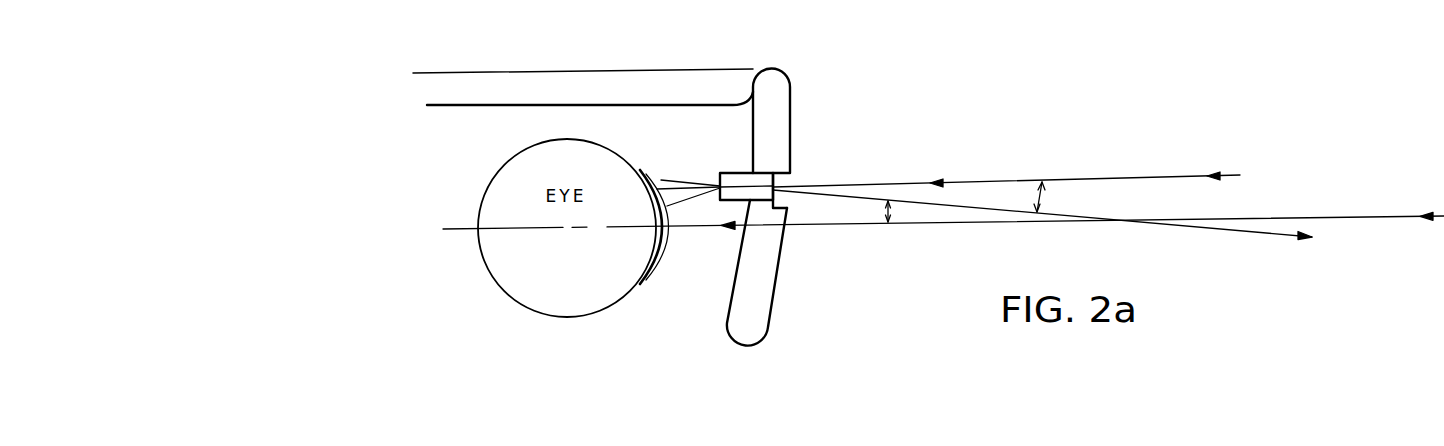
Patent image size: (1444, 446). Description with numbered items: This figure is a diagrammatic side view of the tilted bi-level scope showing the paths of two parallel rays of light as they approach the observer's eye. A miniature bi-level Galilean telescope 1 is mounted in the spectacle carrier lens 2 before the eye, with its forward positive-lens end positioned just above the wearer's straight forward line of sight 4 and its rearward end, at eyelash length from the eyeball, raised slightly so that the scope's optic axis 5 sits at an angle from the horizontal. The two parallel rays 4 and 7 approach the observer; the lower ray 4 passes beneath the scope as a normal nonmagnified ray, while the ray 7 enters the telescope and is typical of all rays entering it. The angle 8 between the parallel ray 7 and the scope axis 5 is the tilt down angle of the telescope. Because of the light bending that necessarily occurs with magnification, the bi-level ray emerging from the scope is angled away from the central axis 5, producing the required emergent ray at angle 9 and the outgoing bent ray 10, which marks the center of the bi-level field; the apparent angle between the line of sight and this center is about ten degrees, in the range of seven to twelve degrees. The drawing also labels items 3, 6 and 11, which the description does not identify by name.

The miniature bi-level Galilean telescope 1 is at (738, 173).
The spectacle carrier lens 2 is at (792, 130).
The temple 3 is at (583, 70).
The line of sight 4 is at (1380, 217).
The optic axis of the scope 5 is at (1235, 232).
The deflection angle 6 is at (893, 208).
The parallel ray entering the scope 7 is at (1130, 177).
The ray angle (tilt down angle) 8 is at (664, 181).
The emergent ray angle 9 is at (671, 196).
The outgoing bent ray 10 is at (682, 200).
The optical deflecting element 11 is at (719, 184).